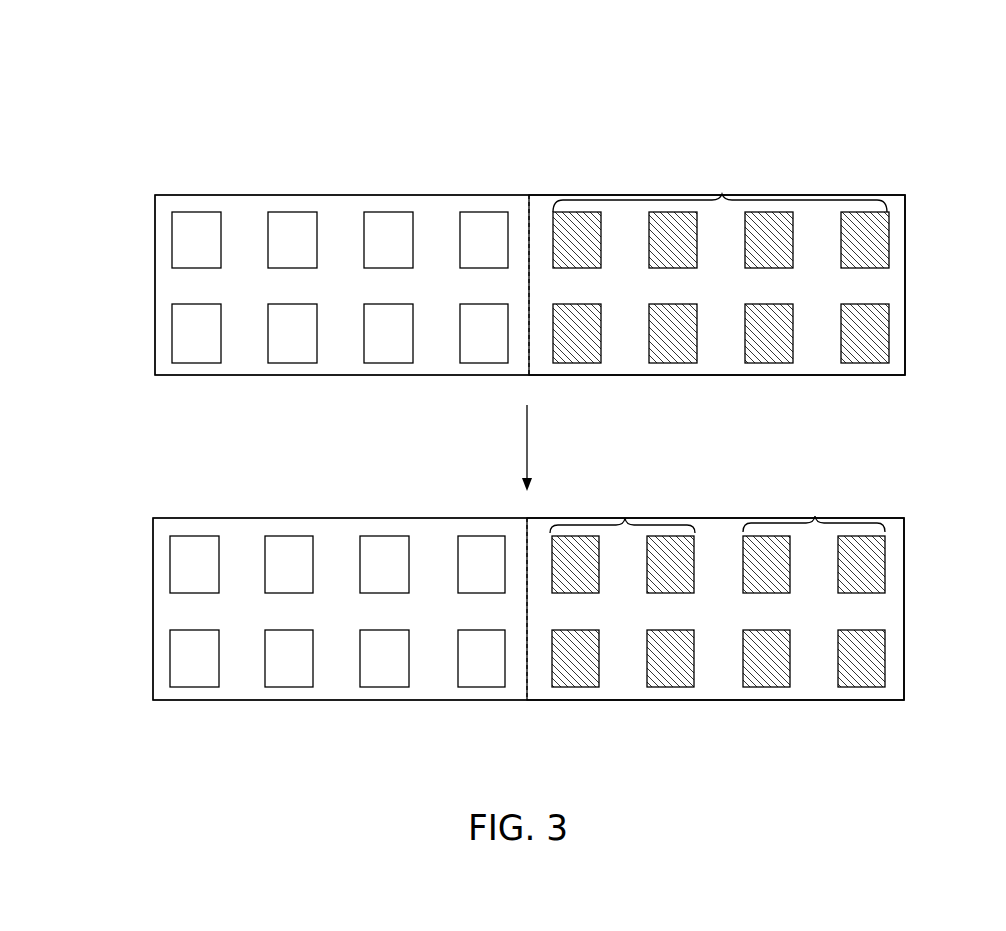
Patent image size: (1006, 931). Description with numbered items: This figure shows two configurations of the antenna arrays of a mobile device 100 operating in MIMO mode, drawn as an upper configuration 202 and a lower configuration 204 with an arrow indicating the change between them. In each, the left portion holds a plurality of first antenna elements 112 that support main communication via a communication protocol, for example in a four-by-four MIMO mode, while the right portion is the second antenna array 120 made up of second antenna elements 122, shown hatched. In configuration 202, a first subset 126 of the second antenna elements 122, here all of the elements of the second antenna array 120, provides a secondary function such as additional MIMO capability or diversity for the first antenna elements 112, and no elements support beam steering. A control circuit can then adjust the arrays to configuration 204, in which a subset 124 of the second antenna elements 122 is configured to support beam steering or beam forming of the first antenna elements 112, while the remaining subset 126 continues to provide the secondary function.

The mobile device 100 is at (340, 204).
The first antenna elements 112 is at (162, 285).
The second antenna array 120 is at (886, 195).
The second antenna elements 122 is at (896, 287).
The subset of second antenna elements 124 is at (626, 517).
The first subset of second antenna elements 126 is at (724, 195).
The configuration 202 is at (162, 102).
The configuration 204 is at (154, 471).